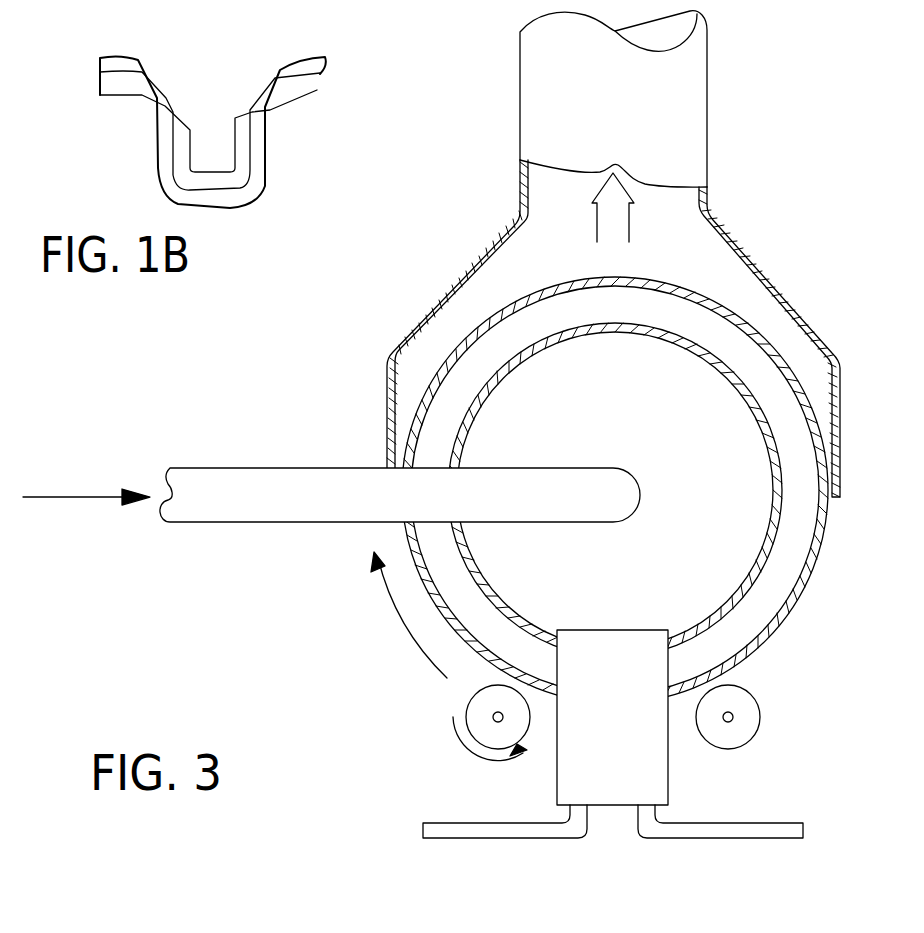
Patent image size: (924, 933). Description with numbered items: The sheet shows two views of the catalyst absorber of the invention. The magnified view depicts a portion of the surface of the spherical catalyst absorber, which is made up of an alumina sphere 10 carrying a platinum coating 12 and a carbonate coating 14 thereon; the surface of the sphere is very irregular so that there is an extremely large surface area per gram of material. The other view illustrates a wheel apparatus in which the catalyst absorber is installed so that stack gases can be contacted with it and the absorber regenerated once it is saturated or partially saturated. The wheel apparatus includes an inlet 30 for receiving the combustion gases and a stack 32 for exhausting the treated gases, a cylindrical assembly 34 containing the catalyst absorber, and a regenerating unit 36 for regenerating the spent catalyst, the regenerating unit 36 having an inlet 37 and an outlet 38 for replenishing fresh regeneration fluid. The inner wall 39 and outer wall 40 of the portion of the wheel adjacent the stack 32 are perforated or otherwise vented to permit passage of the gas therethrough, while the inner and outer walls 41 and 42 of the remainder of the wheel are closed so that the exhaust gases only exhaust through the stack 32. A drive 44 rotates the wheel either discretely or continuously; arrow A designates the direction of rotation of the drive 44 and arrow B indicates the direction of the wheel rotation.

In FIG. 1B, the alumina sphere 10 is at (248, 198).
In FIG. 1B, the platinum coating 12 is at (253, 108).
In FIG. 1B, the carbonate coating 14 is at (245, 105).
In FIG. 3, the inlet 30 is at (322, 482).
In FIG. 3, the stack 32 is at (590, 116).
In FIG. 3, the cylindrical assembly 34 is at (832, 418).
In FIG. 3, the regenerating unit 36 is at (603, 725).
In FIG. 3, the inlet 37 is at (497, 838).
In FIG. 3, the outlet 38 is at (695, 840).
In FIG. 3, the inner wall 39 is at (716, 351).
In FIG. 3, the outer wall 40 is at (686, 290).
In FIG. 3, the inner wall 41 is at (665, 475).
In FIG. 3, the outer wall 42 is at (630, 467).
In FIG. 3, the drive 44 is at (467, 707).